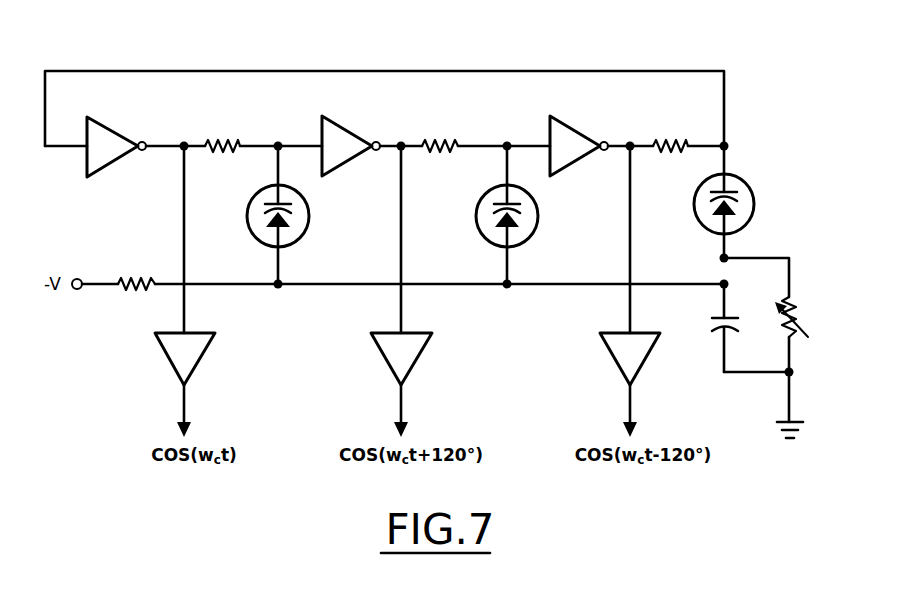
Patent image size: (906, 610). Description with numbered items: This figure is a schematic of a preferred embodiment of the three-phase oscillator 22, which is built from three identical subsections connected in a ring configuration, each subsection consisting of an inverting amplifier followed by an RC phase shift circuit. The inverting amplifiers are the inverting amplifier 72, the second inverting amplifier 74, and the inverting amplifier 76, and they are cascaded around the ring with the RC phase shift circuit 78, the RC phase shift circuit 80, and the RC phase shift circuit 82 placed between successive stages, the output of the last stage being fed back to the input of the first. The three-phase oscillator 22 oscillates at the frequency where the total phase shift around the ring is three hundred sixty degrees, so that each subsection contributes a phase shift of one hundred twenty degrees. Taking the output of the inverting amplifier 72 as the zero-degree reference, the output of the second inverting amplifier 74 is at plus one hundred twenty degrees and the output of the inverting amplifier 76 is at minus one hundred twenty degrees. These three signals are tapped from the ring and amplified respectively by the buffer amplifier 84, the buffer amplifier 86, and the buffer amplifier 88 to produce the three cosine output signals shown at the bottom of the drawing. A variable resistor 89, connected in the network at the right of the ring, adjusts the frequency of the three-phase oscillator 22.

The three-phase oscillator 22 is at (576, 28).
The inverting amplifier 72 is at (118, 117).
The second inverting amplifier 74 is at (348, 117).
The inverting amplifier 76 is at (581, 117).
The RC phase shift circuit 78 is at (226, 190).
The RC phase shift circuit 80 is at (448, 190).
The RC phase shift circuit 82 is at (680, 188).
The buffer amplifier 84 is at (167, 366).
The buffer amplifier 86 is at (388, 365).
The buffer amplifier 88 is at (620, 363).
The variable resistor 89 is at (802, 294).